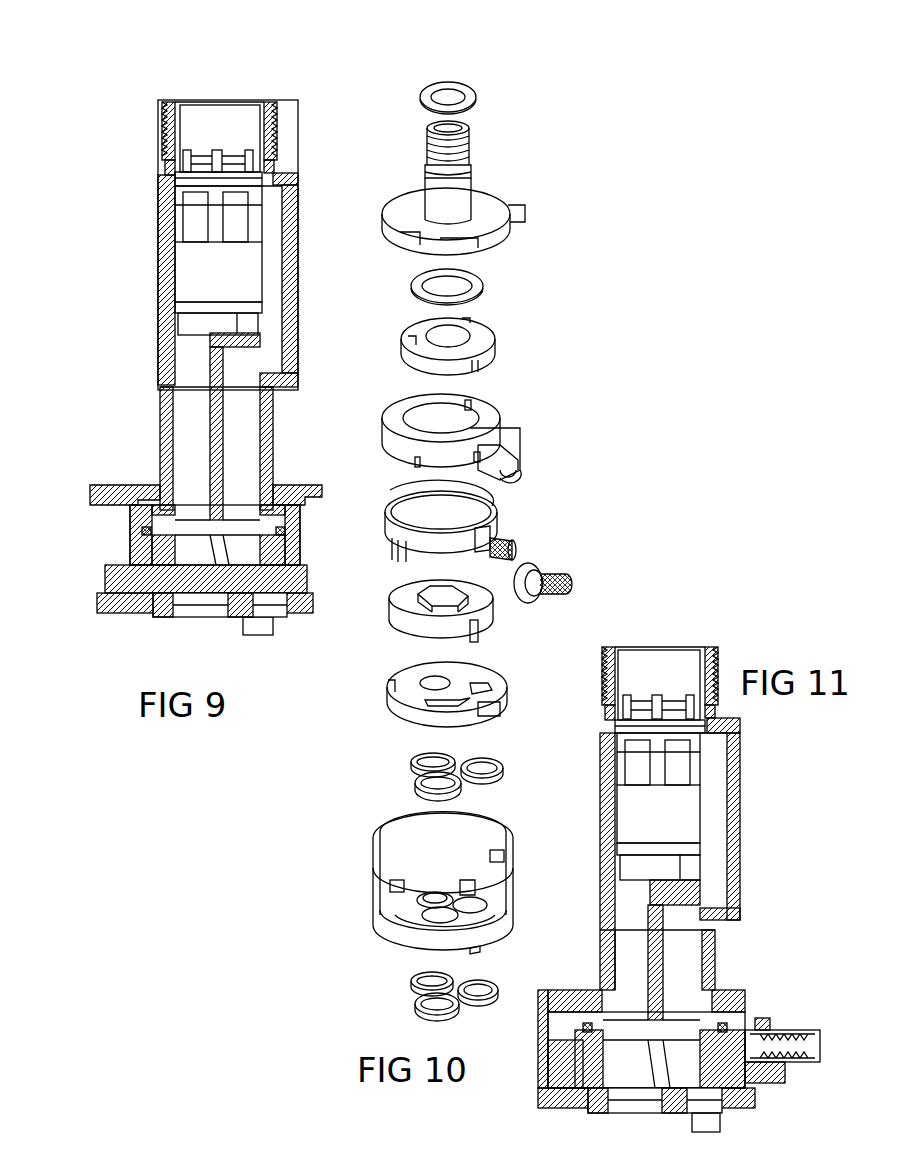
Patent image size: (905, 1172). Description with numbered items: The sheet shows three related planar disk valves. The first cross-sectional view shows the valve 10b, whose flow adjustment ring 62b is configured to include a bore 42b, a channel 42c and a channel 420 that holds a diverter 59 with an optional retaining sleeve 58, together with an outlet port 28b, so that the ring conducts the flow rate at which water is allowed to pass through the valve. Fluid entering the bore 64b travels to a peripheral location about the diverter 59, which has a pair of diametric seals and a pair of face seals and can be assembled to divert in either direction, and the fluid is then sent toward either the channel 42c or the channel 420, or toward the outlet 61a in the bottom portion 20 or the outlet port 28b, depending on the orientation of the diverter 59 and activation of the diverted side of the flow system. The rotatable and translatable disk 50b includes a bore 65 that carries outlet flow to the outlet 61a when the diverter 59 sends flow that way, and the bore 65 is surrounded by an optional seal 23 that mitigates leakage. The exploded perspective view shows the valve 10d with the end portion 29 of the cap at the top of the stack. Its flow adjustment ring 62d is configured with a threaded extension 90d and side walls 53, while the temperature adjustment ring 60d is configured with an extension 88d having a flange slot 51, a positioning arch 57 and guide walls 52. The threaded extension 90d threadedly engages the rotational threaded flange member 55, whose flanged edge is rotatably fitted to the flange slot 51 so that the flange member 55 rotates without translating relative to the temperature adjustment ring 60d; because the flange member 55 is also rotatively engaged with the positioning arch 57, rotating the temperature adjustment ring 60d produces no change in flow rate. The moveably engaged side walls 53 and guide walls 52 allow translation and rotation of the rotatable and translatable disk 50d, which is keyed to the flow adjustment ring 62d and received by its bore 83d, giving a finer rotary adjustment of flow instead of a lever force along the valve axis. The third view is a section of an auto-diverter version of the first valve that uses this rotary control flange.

In FIG. 9, the valve 10b is at (212, 62).
In FIG. 10, the valve 10d is at (495, 85).
In FIG. 9, the bottom portion 20 is at (312, 602).
In FIG. 10, the bottom portion 20 is at (497, 938).
In FIG. 11, the bottom portion 20 is at (757, 1100).
In FIG. 9, the seal 23 is at (135, 507).
In FIG. 9, the outlet port 28b is at (197, 99).
In FIG. 10, the end portion 29 is at (465, 130).
In FIG. 9, the bore 42b is at (250, 410).
In FIG. 11, the bore 42b is at (688, 958).
In FIG. 9, the channel 42c is at (180, 418).
In FIG. 11, the channel 42c is at (620, 948).
In FIG. 9, the rotatable and translatable disk 50b is at (285, 548).
In FIG. 10, the rotatable and translatable disk 50d is at (490, 630).
In FIG. 10, the flange slot 51 is at (477, 460).
In FIG. 10, the guide walls 52 is at (468, 405).
In FIG. 10, the side walls 53 is at (488, 508).
In FIG. 10, the rotational threaded flange member 55 is at (560, 570).
In FIG. 10, the positioning arch 57 is at (509, 467).
In FIG. 9, the retaining sleeve 58 is at (258, 104).
In FIG. 9, the diverter 59 is at (246, 228).
In FIG. 11, the diverter 59 is at (690, 770).
In FIG. 10, the temperature adjustment ring 60d is at (497, 415).
In FIG. 9, the outlet 61a is at (175, 602).
In FIG. 10, the outlet 61a is at (410, 922).
In FIG. 9, the flow adjustment ring 62b is at (278, 440).
In FIG. 10, the flow adjustment ring 62d is at (490, 520).
In FIG. 9, the bore 64b is at (250, 540).
In FIG. 9, the bore 65 is at (160, 537).
In FIG. 10, the bore 83d is at (413, 505).
In FIG. 10, the extension 88d is at (518, 445).
In FIG. 10, the threaded extension 90d is at (510, 548).
In FIG. 9, the channel 420 is at (210, 128).
In FIG. 11, the channel 420 is at (662, 675).